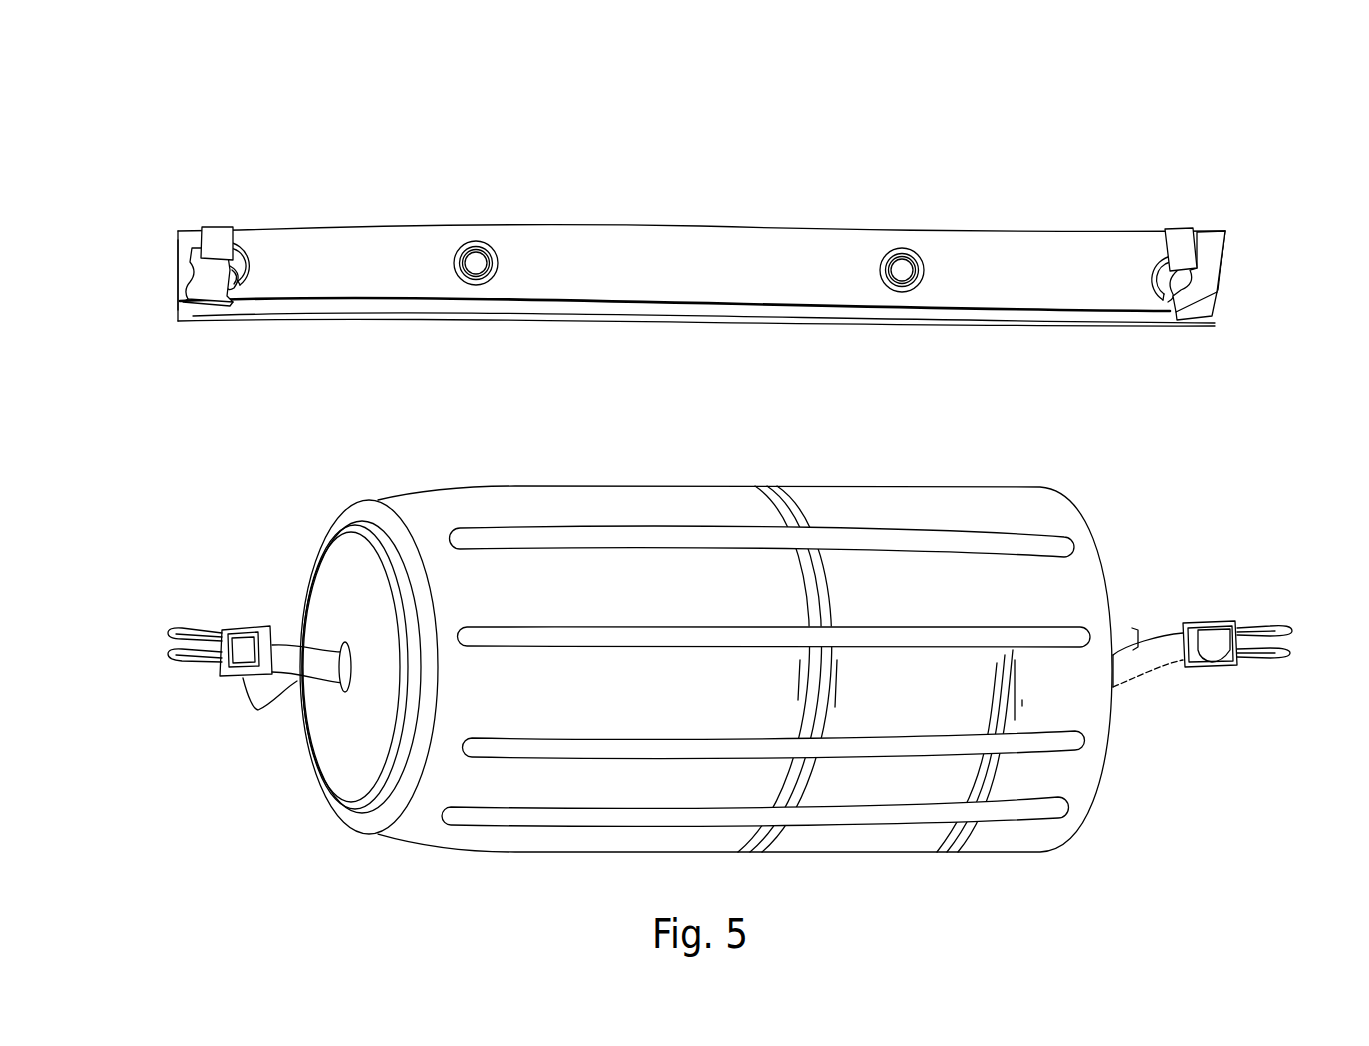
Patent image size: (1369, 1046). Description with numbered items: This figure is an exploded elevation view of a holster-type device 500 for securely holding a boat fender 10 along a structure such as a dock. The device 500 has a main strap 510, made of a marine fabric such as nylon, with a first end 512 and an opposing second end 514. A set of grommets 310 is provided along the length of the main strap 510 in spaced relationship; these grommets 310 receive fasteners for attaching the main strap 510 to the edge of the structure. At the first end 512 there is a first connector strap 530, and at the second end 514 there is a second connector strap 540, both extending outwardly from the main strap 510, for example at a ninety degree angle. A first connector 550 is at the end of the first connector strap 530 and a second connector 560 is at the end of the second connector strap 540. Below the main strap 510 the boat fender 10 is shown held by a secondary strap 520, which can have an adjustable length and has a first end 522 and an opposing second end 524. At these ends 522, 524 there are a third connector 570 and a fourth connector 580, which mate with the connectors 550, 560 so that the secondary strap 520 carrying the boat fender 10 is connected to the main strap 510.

The device 500 is at (849, 153).
The main strap 510 is at (671, 260).
The first end 512 is at (177, 247).
The second end 514 is at (1221, 259).
The grommets 310 is at (466, 252).
The first connector strap 530 is at (217, 233).
The second connector strap 540 is at (1208, 313).
The first connector 550 is at (214, 288).
The second connector 560 is at (1170, 300).
The boat fender 10 is at (524, 512).
The third connector 570 is at (263, 641).
The fourth connector 580 is at (1216, 630).
The first end 522 is at (259, 700).
The second end 524 is at (1135, 629).
The secondary strap 520 is at (1140, 665).